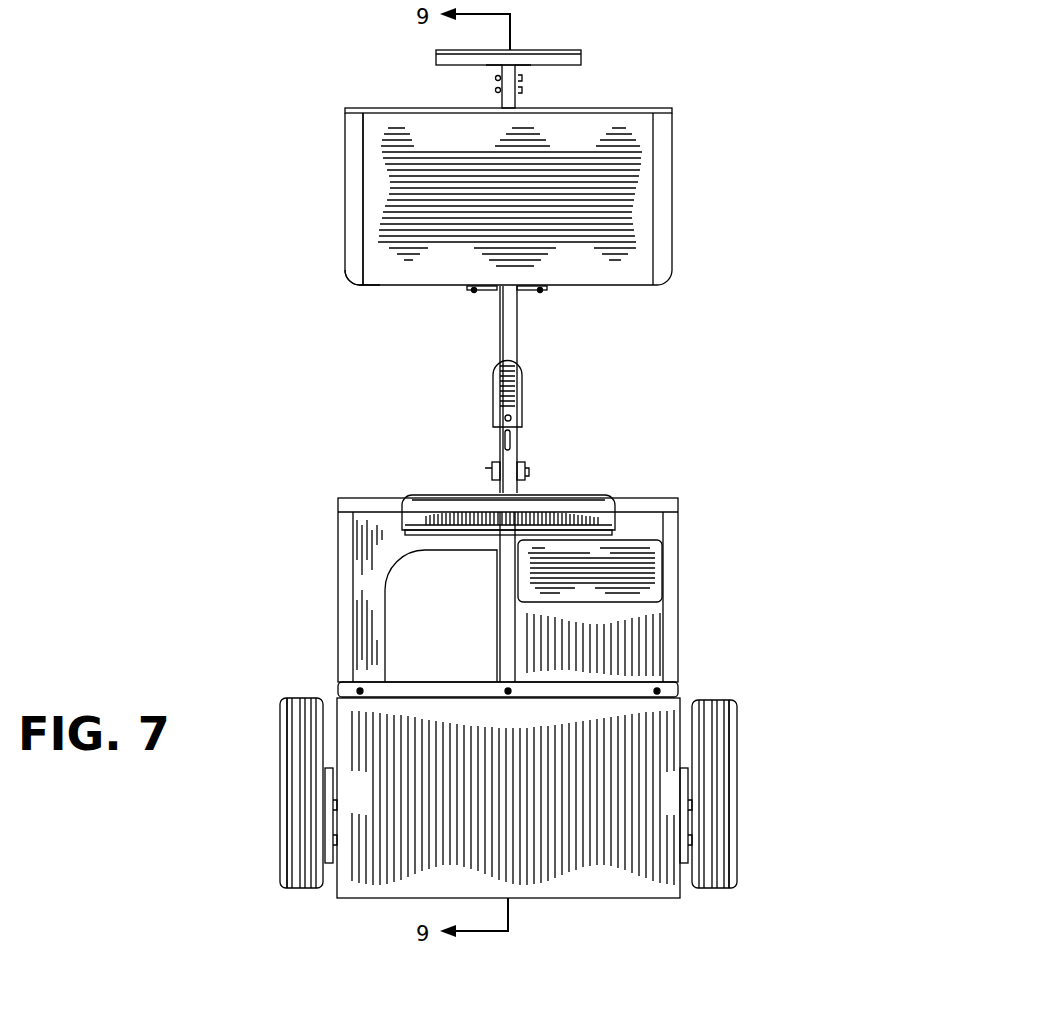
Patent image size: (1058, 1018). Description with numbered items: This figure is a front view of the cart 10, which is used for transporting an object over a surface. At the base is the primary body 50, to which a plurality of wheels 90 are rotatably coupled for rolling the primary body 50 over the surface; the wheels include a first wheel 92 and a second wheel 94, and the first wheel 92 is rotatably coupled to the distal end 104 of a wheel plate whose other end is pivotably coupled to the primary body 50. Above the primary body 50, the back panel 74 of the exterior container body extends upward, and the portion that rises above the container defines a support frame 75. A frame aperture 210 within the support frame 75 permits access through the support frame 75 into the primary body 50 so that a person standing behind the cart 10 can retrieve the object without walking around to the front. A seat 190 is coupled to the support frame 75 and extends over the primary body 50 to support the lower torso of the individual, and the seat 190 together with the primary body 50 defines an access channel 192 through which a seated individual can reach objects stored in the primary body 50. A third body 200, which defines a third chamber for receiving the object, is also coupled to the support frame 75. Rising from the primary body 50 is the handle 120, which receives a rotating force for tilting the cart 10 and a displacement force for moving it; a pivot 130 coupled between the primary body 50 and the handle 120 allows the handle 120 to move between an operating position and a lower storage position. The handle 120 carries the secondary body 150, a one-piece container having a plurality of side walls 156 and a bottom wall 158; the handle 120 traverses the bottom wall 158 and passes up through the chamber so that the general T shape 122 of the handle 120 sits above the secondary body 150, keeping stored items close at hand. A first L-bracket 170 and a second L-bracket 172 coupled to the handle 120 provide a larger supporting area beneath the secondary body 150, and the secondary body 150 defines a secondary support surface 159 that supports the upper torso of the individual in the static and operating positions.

The cart 10 is at (826, 54).
The handle 120 is at (565, 50).
The general T shape 122 is at (436, 56).
The secondary body 150 is at (664, 178).
The side walls 156 is at (345, 195).
The bottom wall 158 is at (392, 287).
The secondary support surface 159 is at (640, 236).
The second L-bracket 172 is at (470, 291).
The first L-bracket 170 is at (545, 291).
The pivot 130 is at (522, 470).
The seat 190 is at (585, 493).
The access channel 192 is at (275, 612).
The support frame 75 is at (378, 525).
The frame aperture 210 is at (385, 578).
The third body 200 is at (657, 566).
The back panel 74 is at (653, 617).
The distal end 104 is at (684, 770).
The primary body 50 is at (625, 885).
The wheels 90 is at (282, 815).
The first wheel 92 is at (737, 820).
The second wheel 94 is at (282, 856).